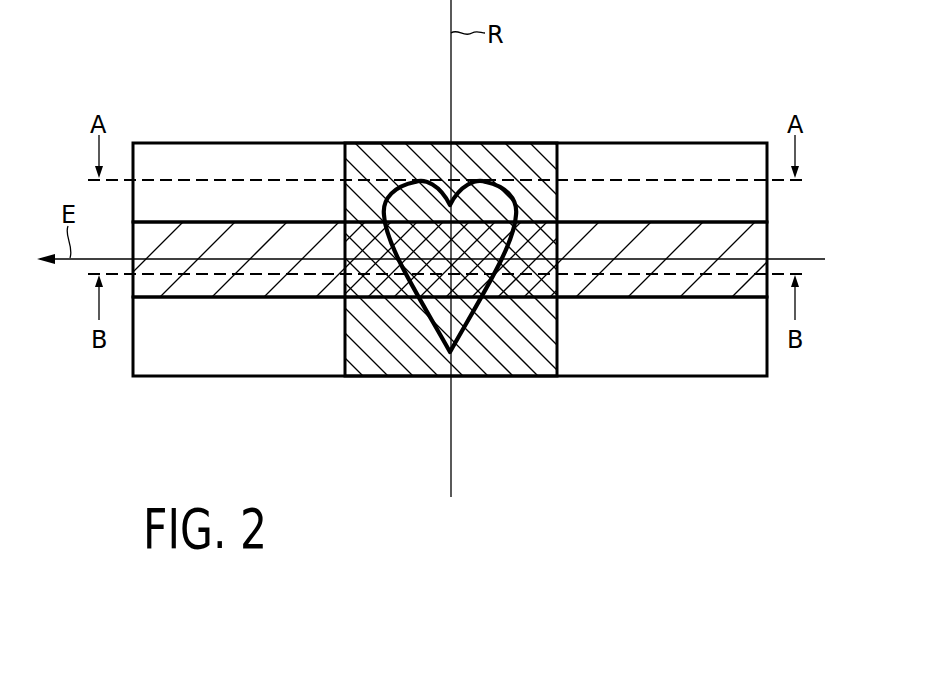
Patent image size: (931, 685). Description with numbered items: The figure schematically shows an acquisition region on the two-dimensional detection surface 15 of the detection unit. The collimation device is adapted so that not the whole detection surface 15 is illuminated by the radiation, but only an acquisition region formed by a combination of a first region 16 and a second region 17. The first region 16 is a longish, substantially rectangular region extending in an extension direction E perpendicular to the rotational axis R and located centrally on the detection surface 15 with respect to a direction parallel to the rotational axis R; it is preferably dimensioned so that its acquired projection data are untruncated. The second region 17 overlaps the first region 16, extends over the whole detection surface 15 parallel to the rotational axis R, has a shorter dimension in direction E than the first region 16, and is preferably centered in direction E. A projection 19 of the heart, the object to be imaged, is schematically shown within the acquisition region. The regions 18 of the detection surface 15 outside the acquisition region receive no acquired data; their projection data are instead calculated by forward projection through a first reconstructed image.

The detection surface 15 is at (268, 142).
The first region 16 is at (202, 302).
The second region 17 is at (527, 165).
The regions outside the acquisition region 18 is at (660, 351).
The projection of the heart 19 is at (438, 356).